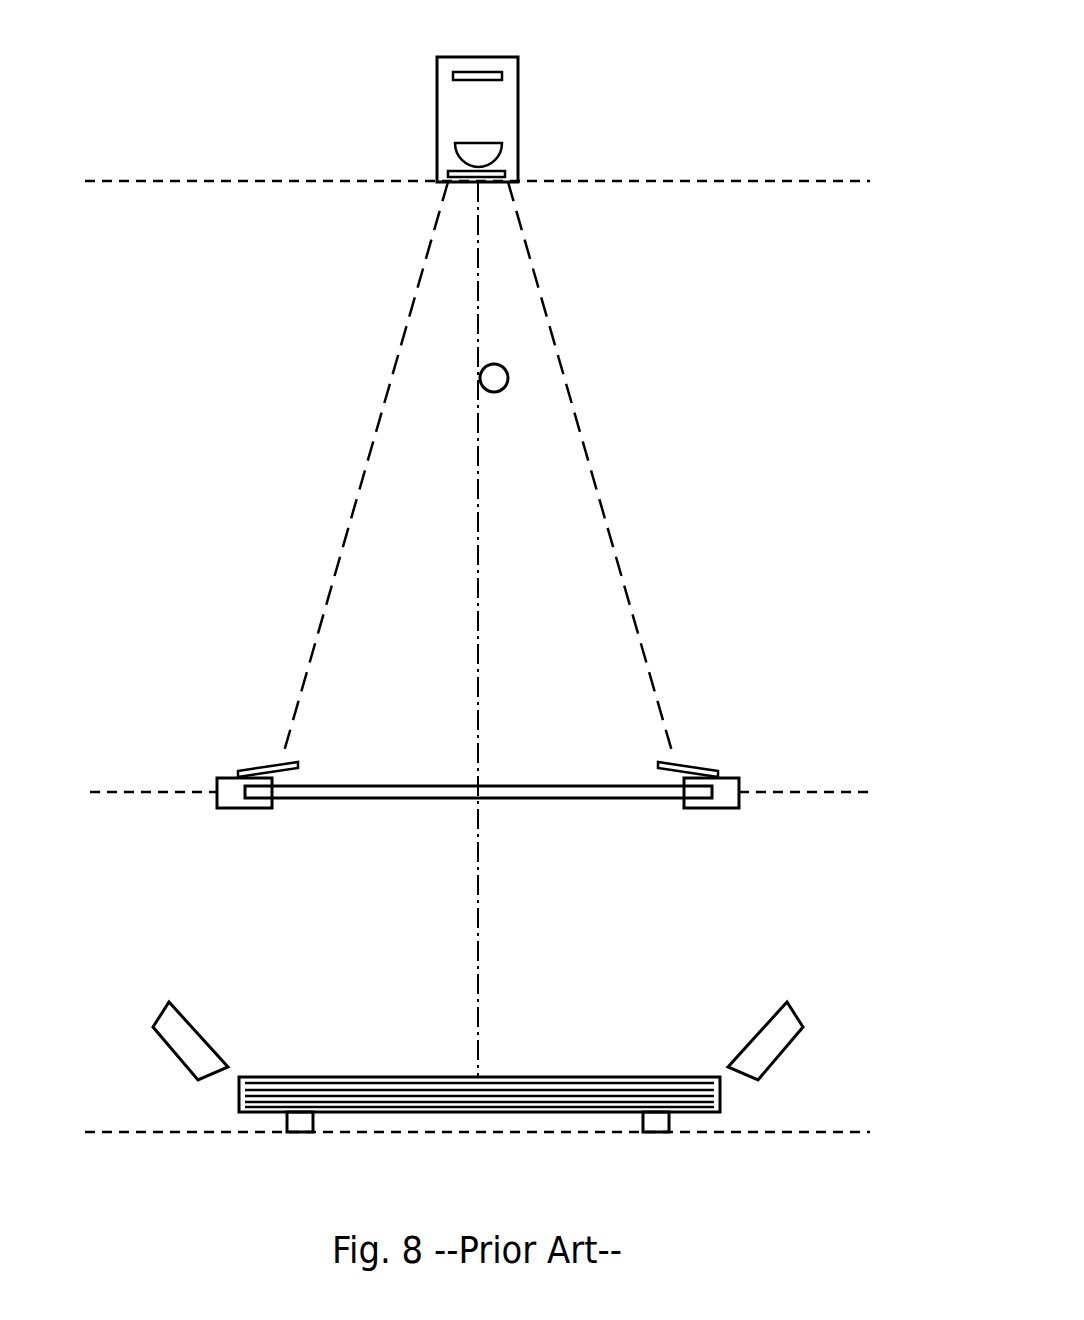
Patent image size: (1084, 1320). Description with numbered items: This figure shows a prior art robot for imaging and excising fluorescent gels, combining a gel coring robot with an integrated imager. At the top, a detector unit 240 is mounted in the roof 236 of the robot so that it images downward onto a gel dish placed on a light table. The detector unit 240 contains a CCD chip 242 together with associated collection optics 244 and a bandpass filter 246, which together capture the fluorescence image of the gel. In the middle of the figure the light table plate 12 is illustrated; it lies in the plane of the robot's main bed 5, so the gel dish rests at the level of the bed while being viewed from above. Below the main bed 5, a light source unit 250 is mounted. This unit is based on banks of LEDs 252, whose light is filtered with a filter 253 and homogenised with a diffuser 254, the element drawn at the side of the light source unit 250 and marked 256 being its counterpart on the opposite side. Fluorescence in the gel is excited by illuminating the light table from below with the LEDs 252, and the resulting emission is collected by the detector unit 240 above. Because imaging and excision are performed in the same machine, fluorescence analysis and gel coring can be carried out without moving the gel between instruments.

The detector unit 240 is at (518, 107).
The CCD chip 242 is at (473, 72).
The collection optics 244 is at (452, 150).
The bandpass filter 246 is at (450, 173).
The roof 236 is at (733, 181).
The light table plate 12 is at (345, 786).
The main bed 5 is at (776, 791).
The light source unit 250 is at (722, 1102).
The LEDs 252 is at (698, 1103).
The filter 253 is at (270, 1090).
The diffuser 254 is at (287, 1078).
The right illuminator 256 is at (802, 1015).